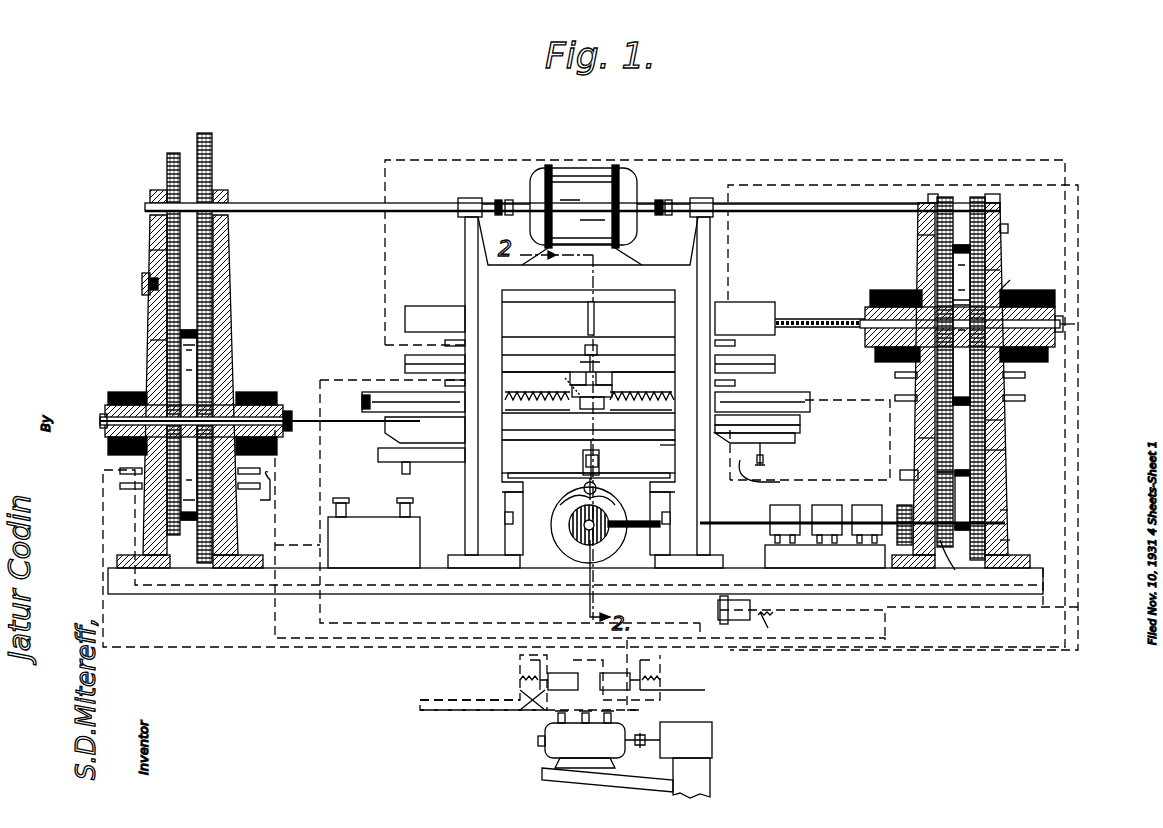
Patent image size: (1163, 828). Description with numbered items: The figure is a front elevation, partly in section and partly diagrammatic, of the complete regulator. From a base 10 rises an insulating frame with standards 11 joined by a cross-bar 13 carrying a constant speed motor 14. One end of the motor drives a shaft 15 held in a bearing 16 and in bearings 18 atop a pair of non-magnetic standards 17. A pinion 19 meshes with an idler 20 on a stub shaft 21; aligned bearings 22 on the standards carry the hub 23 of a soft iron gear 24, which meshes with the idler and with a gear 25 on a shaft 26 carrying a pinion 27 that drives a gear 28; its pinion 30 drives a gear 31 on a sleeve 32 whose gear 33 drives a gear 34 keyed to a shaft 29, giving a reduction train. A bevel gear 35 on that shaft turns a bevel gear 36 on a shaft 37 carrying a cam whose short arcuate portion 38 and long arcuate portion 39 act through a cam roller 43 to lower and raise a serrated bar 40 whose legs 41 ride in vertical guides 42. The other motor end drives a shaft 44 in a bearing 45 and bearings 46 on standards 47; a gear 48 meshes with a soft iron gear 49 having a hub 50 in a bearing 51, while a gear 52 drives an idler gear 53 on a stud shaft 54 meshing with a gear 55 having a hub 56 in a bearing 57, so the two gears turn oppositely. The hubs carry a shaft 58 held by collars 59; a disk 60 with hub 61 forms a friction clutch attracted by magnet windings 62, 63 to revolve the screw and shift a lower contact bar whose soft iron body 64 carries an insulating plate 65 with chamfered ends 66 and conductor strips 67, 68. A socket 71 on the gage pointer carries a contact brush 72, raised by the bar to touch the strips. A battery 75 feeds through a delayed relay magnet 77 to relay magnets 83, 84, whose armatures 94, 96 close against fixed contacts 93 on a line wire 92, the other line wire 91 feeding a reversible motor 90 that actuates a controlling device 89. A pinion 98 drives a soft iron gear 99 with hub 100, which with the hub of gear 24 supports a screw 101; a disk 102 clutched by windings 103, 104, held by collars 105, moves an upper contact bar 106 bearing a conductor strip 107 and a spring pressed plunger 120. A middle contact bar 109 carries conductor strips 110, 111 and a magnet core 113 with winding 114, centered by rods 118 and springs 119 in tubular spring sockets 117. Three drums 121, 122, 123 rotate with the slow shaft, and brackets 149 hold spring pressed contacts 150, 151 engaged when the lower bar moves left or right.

The base 10 is at (250, 592).
The standards 11 is at (480, 563).
The cross-bar 13 is at (660, 257).
The motor 14 is at (592, 165).
The shaft 15 is at (820, 212).
The bearing 16 is at (710, 198).
The standards 17 is at (918, 252).
The bearings 18 is at (930, 194).
The pinion 19 is at (977, 197).
The idler 20 is at (1000, 216).
The stub shaft 21 is at (1008, 230).
The aligned bearings 22 is at (875, 290).
The hub 23 is at (1020, 278).
The soft iron gear 24 is at (1000, 272).
The gear 25 is at (1003, 424).
The shaft 26 is at (1007, 471).
The pinion 27 is at (1005, 452).
The gear 28 is at (1010, 542).
The shaft 29 is at (1008, 510).
The pinion 30 is at (950, 565).
The gear 31 is at (918, 438).
The sleeve 32 is at (915, 470).
The gear 33 is at (900, 474).
The gear 34 is at (897, 512).
The bevel gear 35 is at (612, 530).
The bevel gear 36 is at (570, 503).
The shaft 37 is at (560, 520).
The short arcuate portion 38 is at (555, 556).
The long arcuate portion 39 is at (624, 548).
The bar 40 is at (540, 455).
The legs 41 is at (505, 516).
The vertical guides 42 is at (505, 486).
The cam roller 43 is at (584, 488).
The shaft 44 is at (340, 201).
The bearing 45 is at (465, 198).
The bearings 46 is at (150, 192).
The standards 47 is at (150, 310).
The gear 48 is at (212, 160).
The soft iron gear 49 is at (232, 340).
The hub 50 is at (240, 392).
The bearing 51 is at (272, 392).
The gear 52 is at (167, 160).
The idler gear 53 is at (150, 256).
The stud shaft 54 is at (142, 285).
The gear 55 is at (150, 348).
The hub 56 is at (108, 396).
The bearing 57 is at (120, 405).
The shaft 58 is at (300, 408).
The collars 59 is at (100, 422).
The disk 60 is at (230, 322).
The hub 61 is at (110, 466).
The magnet winding 62 is at (272, 492).
The magnet winding 63 is at (108, 450).
The body 64 is at (800, 418).
The insulating plate 65 is at (800, 428).
The chamfered ends 66 is at (385, 432).
The conductor strip 67 is at (502, 450).
The conductor strip 68 is at (675, 448).
The conductive socket 71 is at (583, 460).
The contact brush 72 is at (586, 452).
The battery 75 is at (340, 540).
The delayed relay magnet 77 is at (728, 622).
The relay magnet 83 is at (538, 682).
The relay magnet 84 is at (642, 684).
The controlling device 89 is at (705, 735).
The motor 90 is at (556, 742).
The line wire 91 is at (455, 698).
The line wire 92 is at (445, 710).
The fixed contacts 93 is at (538, 666).
The armature 94 is at (520, 705).
The armature 96 is at (705, 690).
The pinion 98 is at (945, 197).
The soft iron gear 99 is at (918, 240).
The hub 100 is at (865, 312).
The screw 101 is at (815, 319).
The disk 102 is at (952, 300).
The winding 103 is at (888, 362).
The winding 104 is at (1010, 356).
The collars 105 is at (1063, 324).
The upper contact bar 106 is at (440, 302).
The conductor strip 107 is at (768, 300).
The middle contact bar 109 is at (405, 364).
The conductor strip 110 is at (559, 328).
The conductor strip 111 is at (656, 360).
The magnet core 113 is at (620, 387).
The winding 114 is at (565, 392).
The tubular spring sockets 117 is at (362, 395).
The rods 118 is at (596, 420).
The springs 119 is at (548, 412).
The spring pressed plunger 120 is at (585, 352).
The drum 121 is at (825, 536).
The drum 122 is at (827, 524).
The drum 123 is at (867, 524).
The brackets 149 is at (790, 478).
The spring pressed contact 150 is at (378, 455).
The spring pressed contact 151 is at (775, 460).